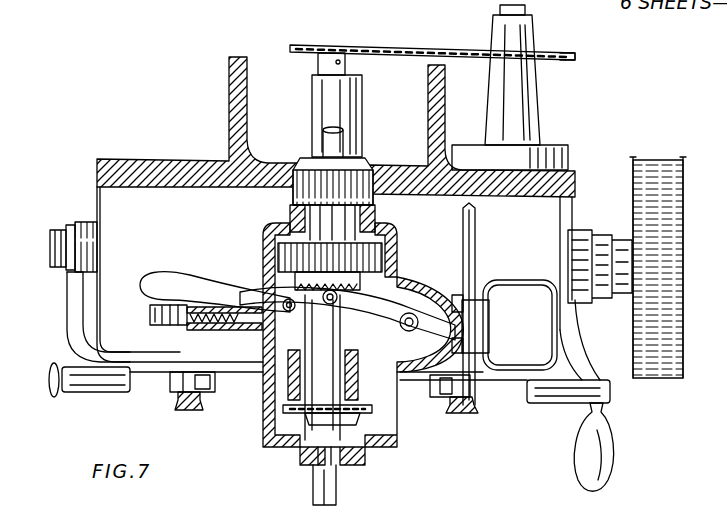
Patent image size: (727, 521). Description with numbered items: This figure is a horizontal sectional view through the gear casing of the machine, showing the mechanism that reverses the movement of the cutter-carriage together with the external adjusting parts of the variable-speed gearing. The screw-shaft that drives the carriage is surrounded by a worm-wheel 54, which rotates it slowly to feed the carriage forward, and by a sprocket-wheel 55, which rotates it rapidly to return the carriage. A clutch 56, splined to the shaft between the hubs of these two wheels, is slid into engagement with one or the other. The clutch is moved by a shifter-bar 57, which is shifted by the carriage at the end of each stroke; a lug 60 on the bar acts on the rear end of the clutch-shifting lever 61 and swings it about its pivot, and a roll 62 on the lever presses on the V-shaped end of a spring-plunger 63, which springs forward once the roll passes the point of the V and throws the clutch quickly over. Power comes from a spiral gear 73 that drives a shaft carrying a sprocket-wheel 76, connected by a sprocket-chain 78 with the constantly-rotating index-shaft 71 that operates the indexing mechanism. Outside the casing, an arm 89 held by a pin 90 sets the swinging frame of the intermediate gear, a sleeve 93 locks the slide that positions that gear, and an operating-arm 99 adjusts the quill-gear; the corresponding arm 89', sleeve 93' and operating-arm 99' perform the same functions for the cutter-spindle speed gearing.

The sprocket-wheel 76 is at (305, 46).
The index-shaft 71 is at (525, 10).
The sprocket-chain 78 is at (574, 53).
The worm-wheel 54 is at (380, 240).
The clutch 56 is at (340, 327).
The clutch-shifting lever 61 is at (395, 305).
The spring-plunger 63 is at (252, 295).
The roll 62 is at (310, 322).
The sprocket-wheel 55 is at (283, 410).
The shifter-bar 57 is at (478, 245).
The lug 60 is at (455, 295).
The arm 89 is at (82, 317).
The pin 90 is at (52, 382).
The operating-arm 99 is at (199, 393).
The sleeve 93 is at (181, 414).
The spiral gear 73 is at (680, 215).
The arm 89' is at (575, 395).
The operating-arm 99' is at (444, 398).
The sleeve 93' is at (463, 418).